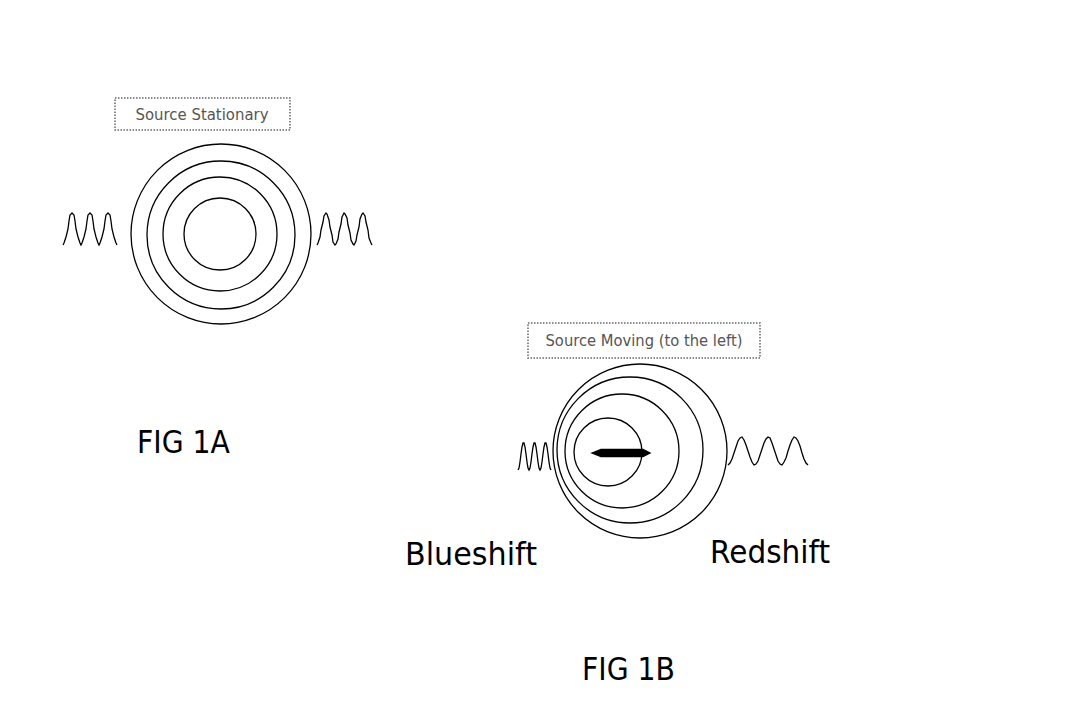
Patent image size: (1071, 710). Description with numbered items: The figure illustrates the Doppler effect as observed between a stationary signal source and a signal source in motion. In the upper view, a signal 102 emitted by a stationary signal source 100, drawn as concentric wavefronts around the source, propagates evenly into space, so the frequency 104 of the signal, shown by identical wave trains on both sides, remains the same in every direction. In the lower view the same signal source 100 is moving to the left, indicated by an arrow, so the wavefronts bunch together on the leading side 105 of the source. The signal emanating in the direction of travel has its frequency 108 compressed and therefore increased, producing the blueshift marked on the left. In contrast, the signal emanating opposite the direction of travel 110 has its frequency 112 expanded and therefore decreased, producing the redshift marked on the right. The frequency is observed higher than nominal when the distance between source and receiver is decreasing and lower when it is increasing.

In FIG. 1A, the signal source 100 is at (217, 225).
In FIG. 1B, the signal source 100 is at (603, 437).
In FIG. 1A, the signal 102 is at (270, 205).
In FIG. 1A, the frequency 104 is at (333, 238).
In FIG. 1B, the compressed wavefront (leading side) 105 is at (562, 453).
In FIG. 1B, the frequency 108 is at (517, 456).
In FIG. 1B, the direction opposite the direction of travel 110 is at (687, 442).
In FIG. 1B, the frequency 112 is at (788, 465).